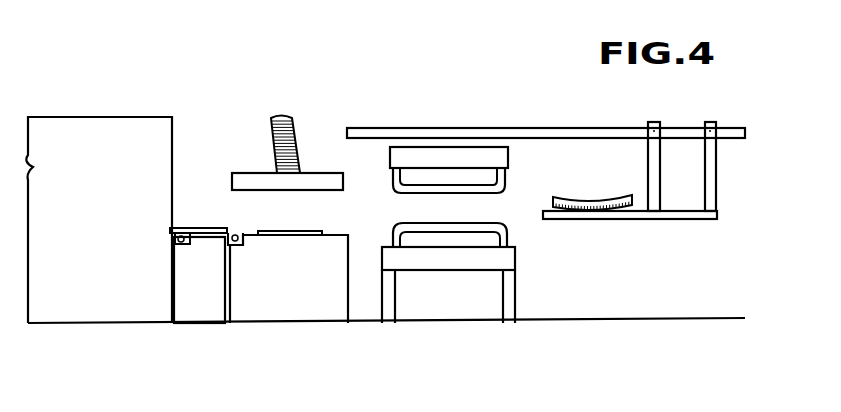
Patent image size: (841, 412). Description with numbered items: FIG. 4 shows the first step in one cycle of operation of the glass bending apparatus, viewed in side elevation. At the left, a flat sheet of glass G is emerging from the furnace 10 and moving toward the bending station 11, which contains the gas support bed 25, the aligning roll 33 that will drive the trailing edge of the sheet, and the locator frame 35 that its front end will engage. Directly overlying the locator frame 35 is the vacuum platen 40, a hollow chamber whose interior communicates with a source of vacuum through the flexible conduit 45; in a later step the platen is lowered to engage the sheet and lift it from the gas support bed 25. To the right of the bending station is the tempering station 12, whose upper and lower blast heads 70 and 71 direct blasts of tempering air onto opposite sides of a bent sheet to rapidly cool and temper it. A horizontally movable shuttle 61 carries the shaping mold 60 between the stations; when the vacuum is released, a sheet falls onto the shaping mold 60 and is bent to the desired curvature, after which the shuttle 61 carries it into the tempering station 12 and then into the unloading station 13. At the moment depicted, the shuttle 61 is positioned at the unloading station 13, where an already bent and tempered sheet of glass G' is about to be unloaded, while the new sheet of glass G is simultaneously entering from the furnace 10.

The furnace 10 is at (100, 116).
The bending station 11 is at (277, 104).
The tempering station 12 is at (458, 127).
The unloading station 13 is at (614, 122).
The gas support bed 25 is at (331, 235).
The aligning roll 33 is at (236, 231).
The locator frame 35 is at (306, 231).
The vacuum platen 40 is at (255, 173).
The flexible conduit 45 is at (291, 123).
The shaping mold 60 is at (553, 203).
The shuttle 61 is at (633, 220).
The upper blast head 70 is at (516, 174).
The lower blast head 71 is at (527, 238).
The sheet of glass G is at (198, 203).
The bent and tempered sheet of glass G' is at (599, 182).